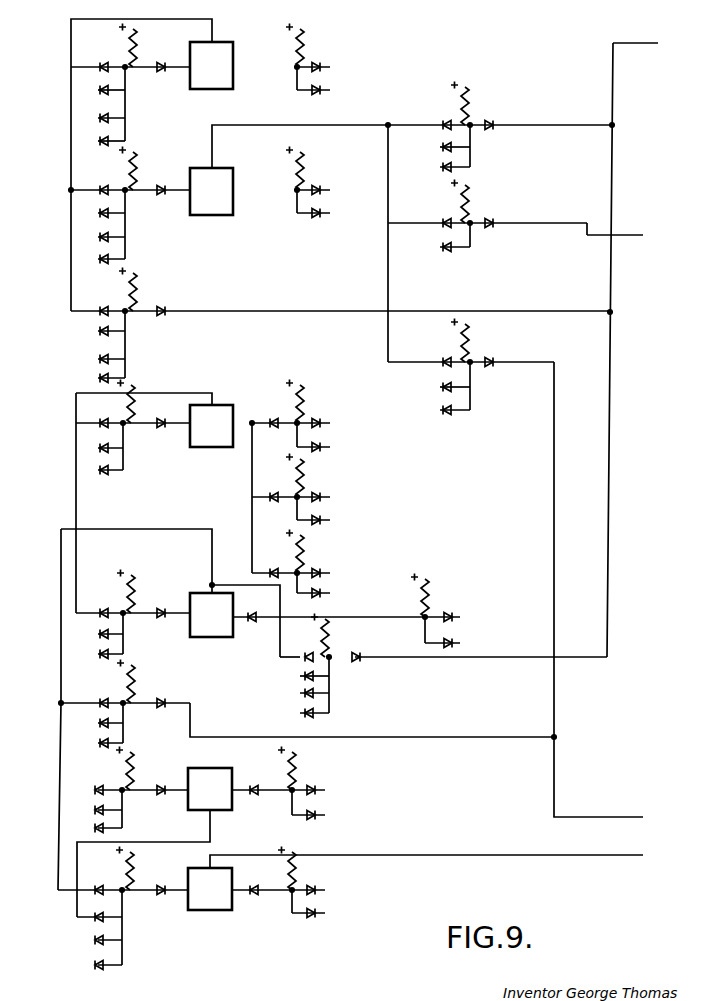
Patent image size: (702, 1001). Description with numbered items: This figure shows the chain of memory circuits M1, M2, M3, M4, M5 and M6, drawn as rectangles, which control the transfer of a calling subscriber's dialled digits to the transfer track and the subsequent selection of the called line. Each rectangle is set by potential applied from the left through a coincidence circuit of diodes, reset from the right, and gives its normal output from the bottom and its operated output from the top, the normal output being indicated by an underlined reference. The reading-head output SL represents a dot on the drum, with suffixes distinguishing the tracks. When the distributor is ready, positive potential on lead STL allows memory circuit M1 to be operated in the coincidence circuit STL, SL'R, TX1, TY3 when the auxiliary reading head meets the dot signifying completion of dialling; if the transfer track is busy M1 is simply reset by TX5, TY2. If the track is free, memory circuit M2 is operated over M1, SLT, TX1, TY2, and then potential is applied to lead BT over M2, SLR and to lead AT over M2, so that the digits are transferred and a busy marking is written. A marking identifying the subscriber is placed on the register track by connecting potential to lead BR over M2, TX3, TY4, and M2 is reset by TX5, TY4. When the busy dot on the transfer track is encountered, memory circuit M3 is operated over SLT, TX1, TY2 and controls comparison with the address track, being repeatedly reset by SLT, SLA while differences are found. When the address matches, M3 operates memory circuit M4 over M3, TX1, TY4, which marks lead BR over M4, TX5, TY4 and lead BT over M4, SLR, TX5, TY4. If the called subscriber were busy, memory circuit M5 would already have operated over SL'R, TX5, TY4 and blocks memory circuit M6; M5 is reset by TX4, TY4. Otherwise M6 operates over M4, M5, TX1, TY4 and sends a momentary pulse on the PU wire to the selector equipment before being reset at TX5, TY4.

The lead STL is at (130, 68).
The auxiliary reading head output SL'R is at (105, 440).
The position output TX1 is at (85, 530).
The block output TY3 is at (99, 146).
The memory circuit M1 is at (152, 118).
The memory circuit M2 is at (401, 237).
The memory circuit M3 is at (80, 611).
The memory circuit M4 is at (81, 889).
The memory circuit M5 is at (38, 916).
The memory circuit M6 is at (210, 889).
The transfer track reading head output SLT is at (88, 224).
The block output TY2 is at (207, 287).
The position output TX5 is at (278, 479).
The block output TY4 is at (269, 590).
The lead BT is at (436, 676).
The lead AT is at (537, 207).
The lead BR is at (535, 350).
The PU wire PU is at (426, 849).
The register track reading head output SLR is at (432, 147).
The position output TX3 is at (430, 387).
The address track reading head output SLA is at (350, 455).
The reading head output SL is at (299, 676).
The position output TX4 is at (296, 790).